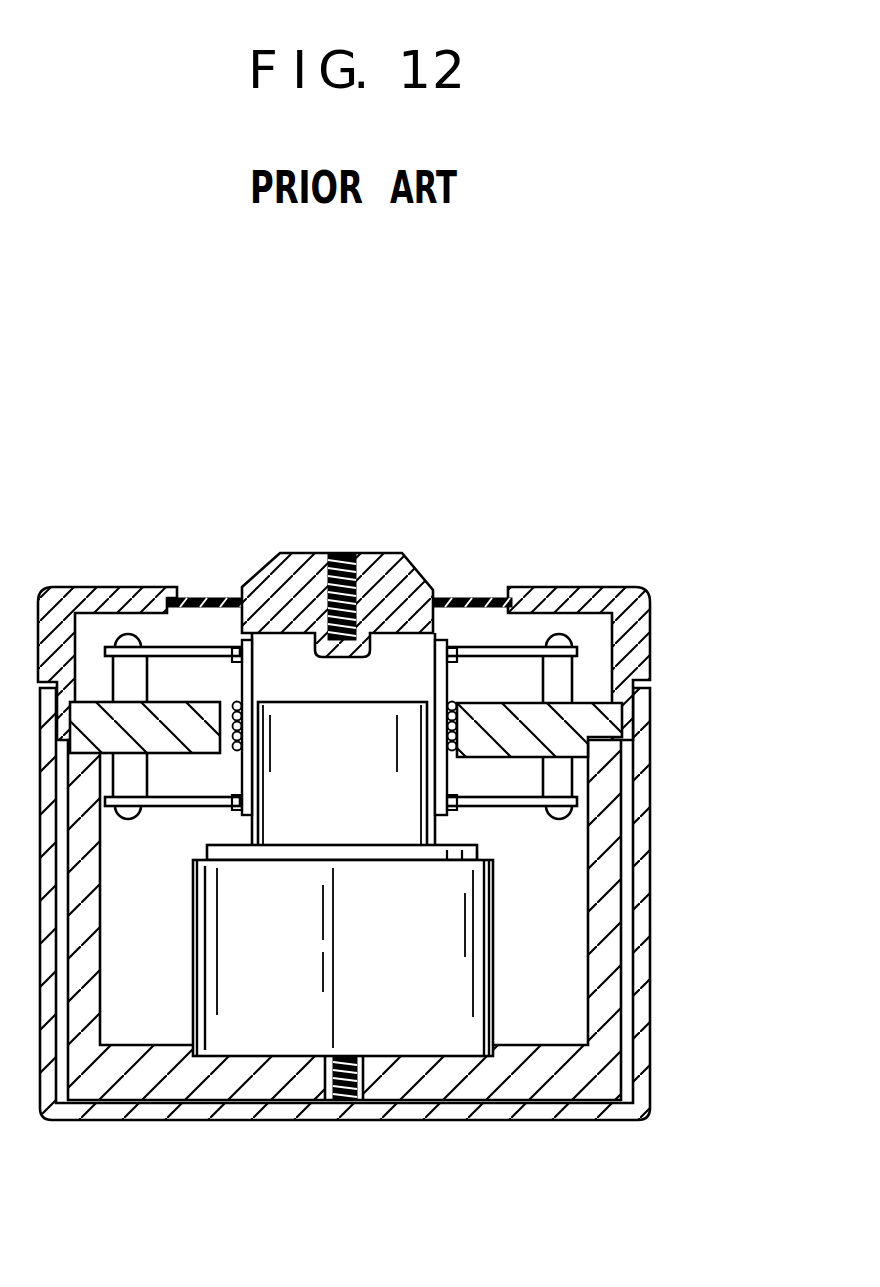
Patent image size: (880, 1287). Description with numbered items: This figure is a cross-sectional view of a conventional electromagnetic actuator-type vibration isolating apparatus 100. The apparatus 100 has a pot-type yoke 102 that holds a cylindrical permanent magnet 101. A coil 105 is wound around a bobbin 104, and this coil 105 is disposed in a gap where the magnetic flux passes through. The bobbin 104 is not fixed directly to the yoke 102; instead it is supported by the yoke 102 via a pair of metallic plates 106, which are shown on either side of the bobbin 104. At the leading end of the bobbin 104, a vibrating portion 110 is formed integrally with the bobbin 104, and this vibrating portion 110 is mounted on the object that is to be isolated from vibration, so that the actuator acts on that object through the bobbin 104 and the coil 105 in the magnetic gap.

The electromagnetic actuator-type vibration isolating apparatus 100 is at (609, 557).
The cylindrical permanent magnet 101 is at (493, 918).
The pot-type yoke 102 is at (585, 700).
The bobbin 104 is at (442, 690).
The coil 105 is at (234, 700).
The metallic plates 106 is at (211, 645).
The vibrating portion 110 is at (262, 552).